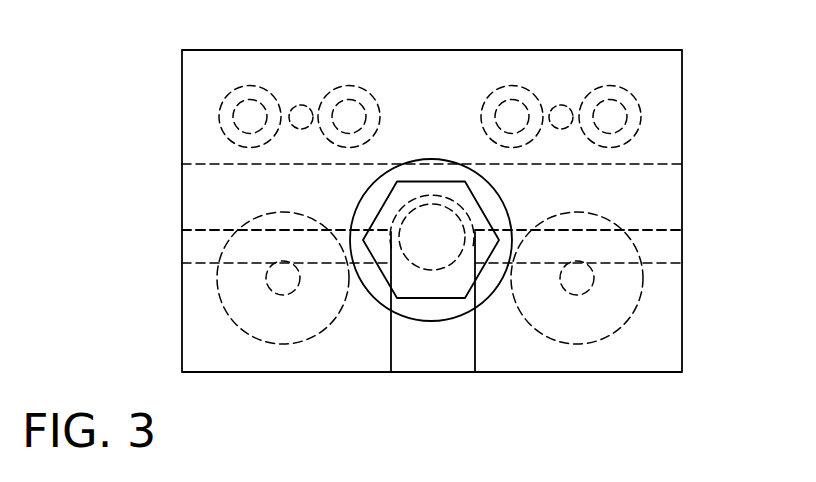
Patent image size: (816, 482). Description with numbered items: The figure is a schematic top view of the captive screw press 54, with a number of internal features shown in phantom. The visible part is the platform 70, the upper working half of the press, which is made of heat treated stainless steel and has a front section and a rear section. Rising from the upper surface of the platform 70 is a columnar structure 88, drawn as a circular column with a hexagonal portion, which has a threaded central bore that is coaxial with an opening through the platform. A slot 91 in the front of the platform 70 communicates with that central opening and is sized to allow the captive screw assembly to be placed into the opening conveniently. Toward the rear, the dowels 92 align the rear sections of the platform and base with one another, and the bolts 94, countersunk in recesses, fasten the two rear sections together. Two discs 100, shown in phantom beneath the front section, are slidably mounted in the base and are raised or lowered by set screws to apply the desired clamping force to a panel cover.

The captive screw press 54 is at (173, 235).
The platform 70 is at (648, 197).
The columnar structure 88 is at (487, 285).
The slot 91 is at (435, 343).
The dowels 92 is at (301, 129).
The bolts 94 is at (344, 100).
The discs 100 is at (293, 328).